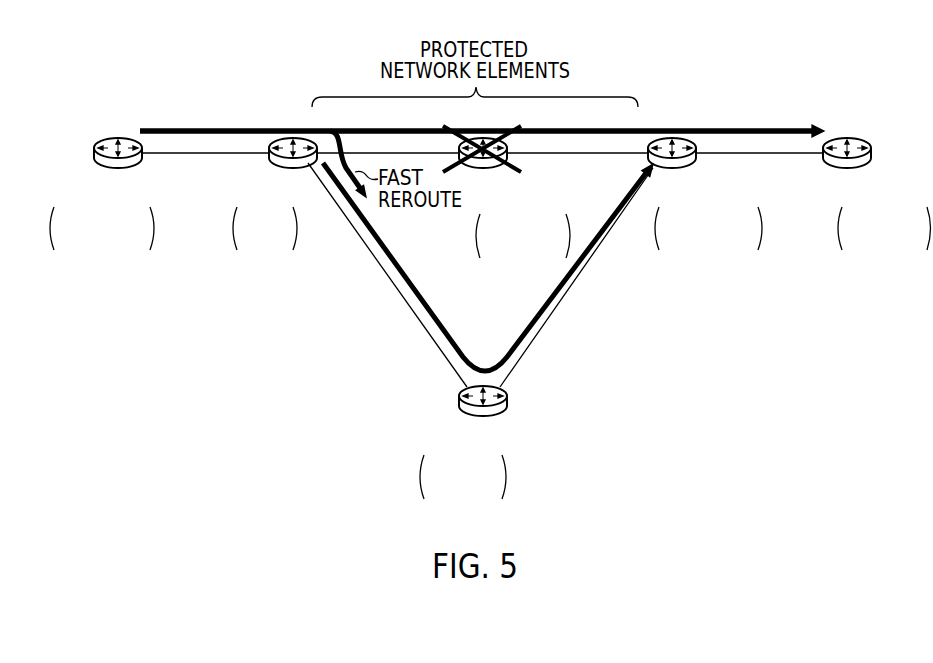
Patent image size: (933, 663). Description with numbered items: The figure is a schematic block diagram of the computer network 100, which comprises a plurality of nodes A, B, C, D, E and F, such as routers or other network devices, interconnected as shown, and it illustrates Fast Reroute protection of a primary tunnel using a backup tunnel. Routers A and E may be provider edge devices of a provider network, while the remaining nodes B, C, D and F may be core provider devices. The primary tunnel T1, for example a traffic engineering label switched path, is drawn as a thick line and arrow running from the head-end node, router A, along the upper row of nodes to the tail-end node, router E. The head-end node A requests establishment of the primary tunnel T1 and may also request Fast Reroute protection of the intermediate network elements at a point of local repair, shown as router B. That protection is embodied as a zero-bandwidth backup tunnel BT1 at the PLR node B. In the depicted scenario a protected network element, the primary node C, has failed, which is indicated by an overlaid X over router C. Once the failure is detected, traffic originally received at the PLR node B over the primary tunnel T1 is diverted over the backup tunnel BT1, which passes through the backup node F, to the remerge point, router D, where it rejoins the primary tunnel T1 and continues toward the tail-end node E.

The computer network 100 is at (704, 43).
The head-end node A is at (118, 172).
The PLR node B is at (290, 172).
The primary node C is at (497, 169).
The remerge point D is at (685, 170).
The tail-end node E is at (862, 170).
The backup node F is at (482, 418).
The primary tunnel T1 is at (219, 128).
The backup tunnel BT1 is at (442, 321).